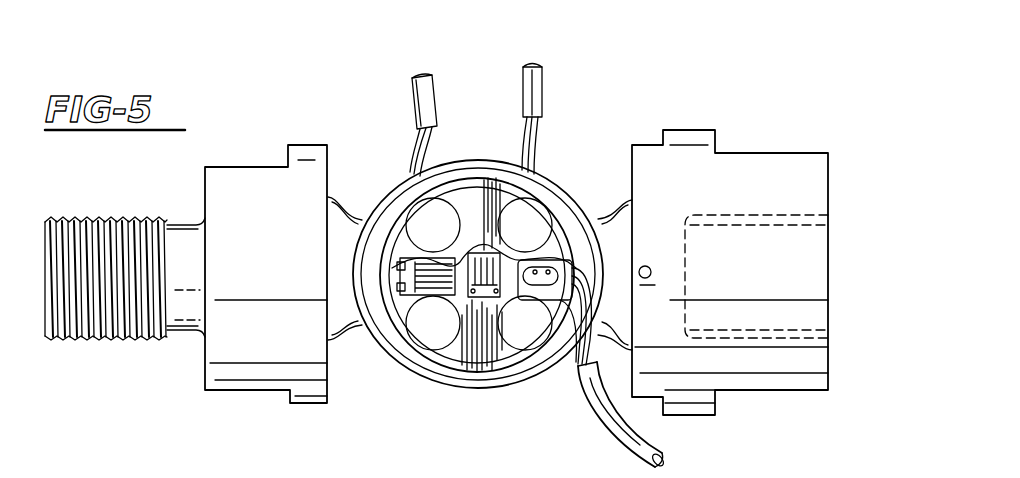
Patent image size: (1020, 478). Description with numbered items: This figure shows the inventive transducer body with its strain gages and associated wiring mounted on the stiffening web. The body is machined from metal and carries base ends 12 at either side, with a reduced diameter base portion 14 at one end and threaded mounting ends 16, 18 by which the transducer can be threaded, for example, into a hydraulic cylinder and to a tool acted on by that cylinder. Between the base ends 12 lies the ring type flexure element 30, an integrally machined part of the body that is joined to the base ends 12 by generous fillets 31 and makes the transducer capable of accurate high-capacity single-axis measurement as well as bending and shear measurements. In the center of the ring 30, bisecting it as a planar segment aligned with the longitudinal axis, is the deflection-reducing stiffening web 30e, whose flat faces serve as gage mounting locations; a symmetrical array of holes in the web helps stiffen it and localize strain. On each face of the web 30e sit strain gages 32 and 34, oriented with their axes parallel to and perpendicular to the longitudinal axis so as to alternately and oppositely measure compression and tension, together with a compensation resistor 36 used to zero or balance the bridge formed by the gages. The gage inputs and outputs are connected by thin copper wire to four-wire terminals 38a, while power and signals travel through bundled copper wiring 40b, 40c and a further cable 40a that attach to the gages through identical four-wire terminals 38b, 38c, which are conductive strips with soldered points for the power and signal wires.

The base ends 12 is at (225, 197).
The reduced diameter base portion 14 is at (650, 160).
The threaded mounting end 16 is at (760, 225).
The threaded mounting end 18 is at (98, 307).
The ring type flexure element 30 is at (497, 133).
The stiffening web 30e is at (448, 350).
The fillets 31 is at (345, 308).
The strain gage 32 is at (485, 262).
The strain gage 34 is at (430, 272).
The compensation resistor 36 is at (540, 284).
The four-wire terminals 38a is at (578, 250).
The four-wire terminal 38b is at (557, 95).
The four-wire terminal 38c is at (378, 165).
The cable 40a is at (623, 425).
The bundled copper wiring 40b is at (528, 90).
The bundled copper wiring 40c is at (417, 97).